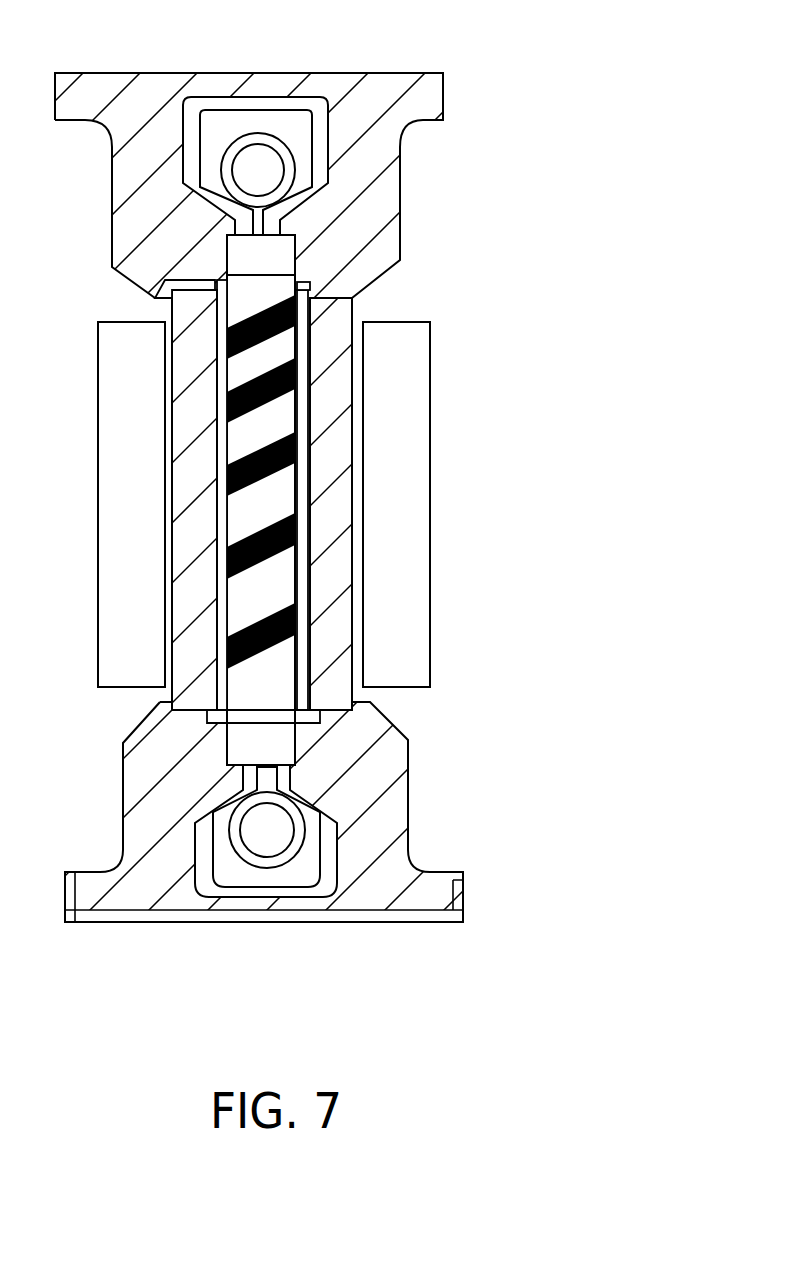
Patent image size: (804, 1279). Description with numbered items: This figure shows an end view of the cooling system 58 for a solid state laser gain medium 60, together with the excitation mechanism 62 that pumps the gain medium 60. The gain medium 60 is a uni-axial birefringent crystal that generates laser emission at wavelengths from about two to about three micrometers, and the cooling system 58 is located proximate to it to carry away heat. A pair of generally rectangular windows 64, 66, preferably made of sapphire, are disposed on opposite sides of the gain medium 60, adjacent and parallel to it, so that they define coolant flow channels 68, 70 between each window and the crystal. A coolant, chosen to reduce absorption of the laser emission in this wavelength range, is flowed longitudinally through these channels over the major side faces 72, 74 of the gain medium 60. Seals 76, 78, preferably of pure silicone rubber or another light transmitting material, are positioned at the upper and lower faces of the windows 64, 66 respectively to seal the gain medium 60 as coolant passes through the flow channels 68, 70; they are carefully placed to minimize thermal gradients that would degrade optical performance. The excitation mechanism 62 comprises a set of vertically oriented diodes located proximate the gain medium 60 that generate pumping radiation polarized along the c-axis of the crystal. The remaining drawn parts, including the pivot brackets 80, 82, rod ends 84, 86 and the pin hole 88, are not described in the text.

The cooling system 58 is at (365, 1033).
The solid state gain medium 60 is at (257, 597).
The excitation mechanism 62 is at (390, 322).
The window 64 is at (335, 370).
The window 66 is at (192, 353).
The coolant flow channel 68 is at (300, 385).
The coolant flow channel 70 is at (240, 370).
The major side face 72 is at (277, 423).
The major side face 74 is at (227, 410).
The seal 76 is at (215, 278).
The seal 78 is at (213, 723).
The upper pivot bracket 80 is at (307, 99).
The lower pivot bracket 82 is at (245, 897).
The rod upper end 84 is at (257, 277).
The rod lower end 86 is at (257, 723).
The pivot pin hole 88 is at (267, 833).